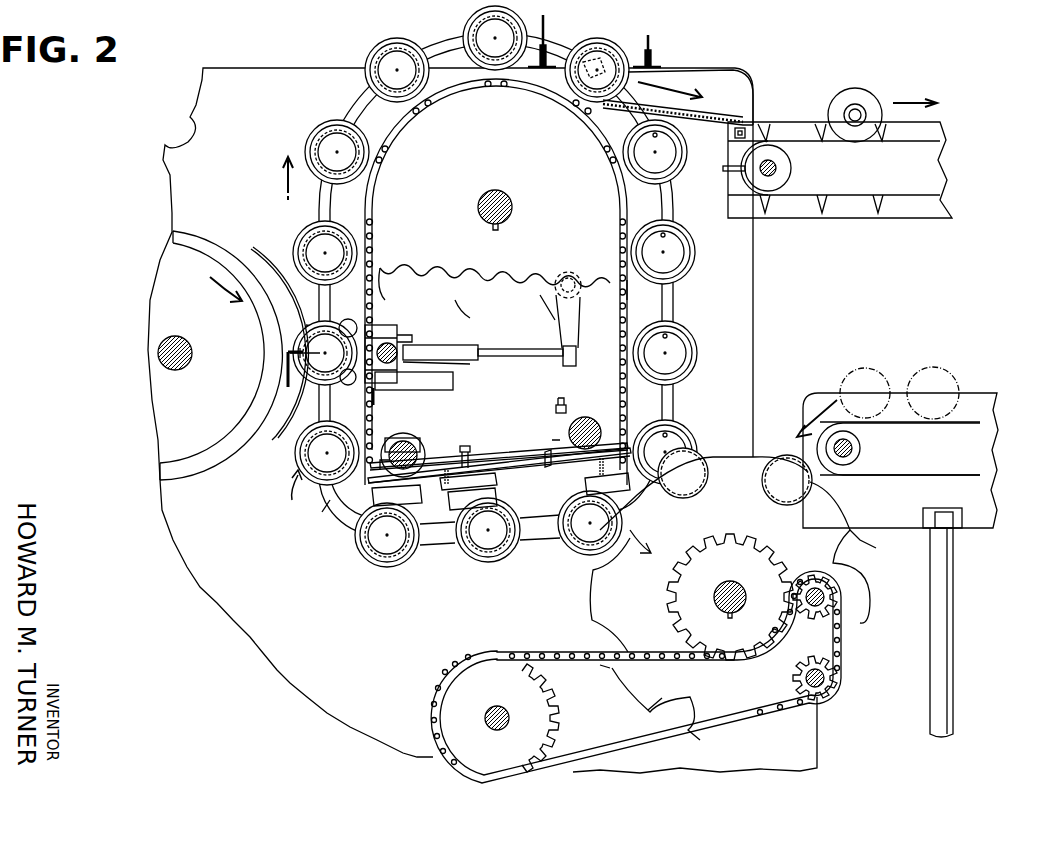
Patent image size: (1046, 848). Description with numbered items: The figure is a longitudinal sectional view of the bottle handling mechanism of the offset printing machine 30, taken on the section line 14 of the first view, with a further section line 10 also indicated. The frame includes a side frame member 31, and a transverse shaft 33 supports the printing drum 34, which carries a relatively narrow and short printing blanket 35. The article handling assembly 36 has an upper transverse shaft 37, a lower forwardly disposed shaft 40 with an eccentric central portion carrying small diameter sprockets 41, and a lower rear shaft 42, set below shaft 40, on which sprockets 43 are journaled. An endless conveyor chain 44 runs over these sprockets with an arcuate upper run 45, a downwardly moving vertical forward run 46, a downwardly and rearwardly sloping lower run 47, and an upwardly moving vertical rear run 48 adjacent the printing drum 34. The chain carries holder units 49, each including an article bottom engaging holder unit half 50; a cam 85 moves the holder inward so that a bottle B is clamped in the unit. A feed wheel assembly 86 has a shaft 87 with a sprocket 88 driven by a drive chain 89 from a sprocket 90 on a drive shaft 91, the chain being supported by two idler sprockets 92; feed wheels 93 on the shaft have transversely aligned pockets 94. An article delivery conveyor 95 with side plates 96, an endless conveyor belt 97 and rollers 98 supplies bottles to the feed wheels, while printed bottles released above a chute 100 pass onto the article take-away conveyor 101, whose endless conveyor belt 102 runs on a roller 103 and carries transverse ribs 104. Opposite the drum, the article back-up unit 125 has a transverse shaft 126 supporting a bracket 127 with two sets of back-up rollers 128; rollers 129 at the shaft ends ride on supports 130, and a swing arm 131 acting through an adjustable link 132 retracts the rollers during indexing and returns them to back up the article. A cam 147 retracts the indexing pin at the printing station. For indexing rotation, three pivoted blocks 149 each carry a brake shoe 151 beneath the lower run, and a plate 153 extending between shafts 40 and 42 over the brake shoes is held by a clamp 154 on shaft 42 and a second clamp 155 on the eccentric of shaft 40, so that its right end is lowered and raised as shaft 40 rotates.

The section line 10 is at (334, 381).
The section line 14 is at (604, 35).
The printing machine 30 is at (726, 70).
The side frame member 31 is at (725, 88).
The shaft 33 is at (178, 335).
The printing drum 34 is at (183, 257).
The printing blanket 35 is at (272, 268).
The article handling assembly 36 is at (672, 312).
The upper transverse shaft 37 is at (512, 202).
The lower forwardly disposed shaft 40 is at (585, 417).
The small diameter sprockets 41 is at (535, 420).
The lower rear shaft 42 is at (415, 445).
The sprockets 43 is at (468, 448).
The endless conveyor chain 44 is at (620, 288).
The arcuate upper run 45 is at (604, 118).
The vertical forward run 46 is at (630, 284).
The lower run 47 is at (562, 530).
The vertical rear run 48 is at (378, 268).
The holder units 49 is at (700, 340).
The article bottom engaging holder unit half 50 is at (680, 222).
The cam 85 is at (440, 580).
The feed wheel assembly 86 is at (715, 458).
The shaft 87 is at (733, 582).
The sprocket 88 is at (728, 534).
The drive chain 89 is at (655, 620).
The sprocket 90 is at (545, 700).
The drive shaft 91 is at (515, 690).
The idler sprockets 92 is at (865, 708).
The feed wheels 93 is at (865, 590).
The pockets 94 is at (860, 550).
The article delivery conveyor 95 is at (980, 372).
The side plates 96 is at (980, 405).
The endless conveyor belt 97 is at (905, 425).
The rollers 98 is at (862, 447).
The chute 100 is at (740, 138).
The article take-away conveyor 101 is at (920, 205).
The endless conveyor belt 102 is at (940, 162).
The roller 103 is at (792, 167).
The ribs 104 is at (848, 220).
The article back-up unit 125 is at (455, 345).
The transverse shaft 126 is at (400, 348).
The bracket 127 is at (380, 330).
The back-up rollers 128 is at (352, 400).
The rollers 129 is at (455, 364).
The supports 130 is at (453, 385).
The swing arm 131 is at (563, 366).
The adjustable link 132 is at (556, 300).
The cam 147 is at (403, 335).
The blocks 149 is at (655, 470).
The brake shoe 151 is at (425, 500).
The plate 153 is at (470, 472).
The clamp 154 is at (405, 438).
The second clamp 155 is at (560, 398).
The bottle B is at (920, 348).